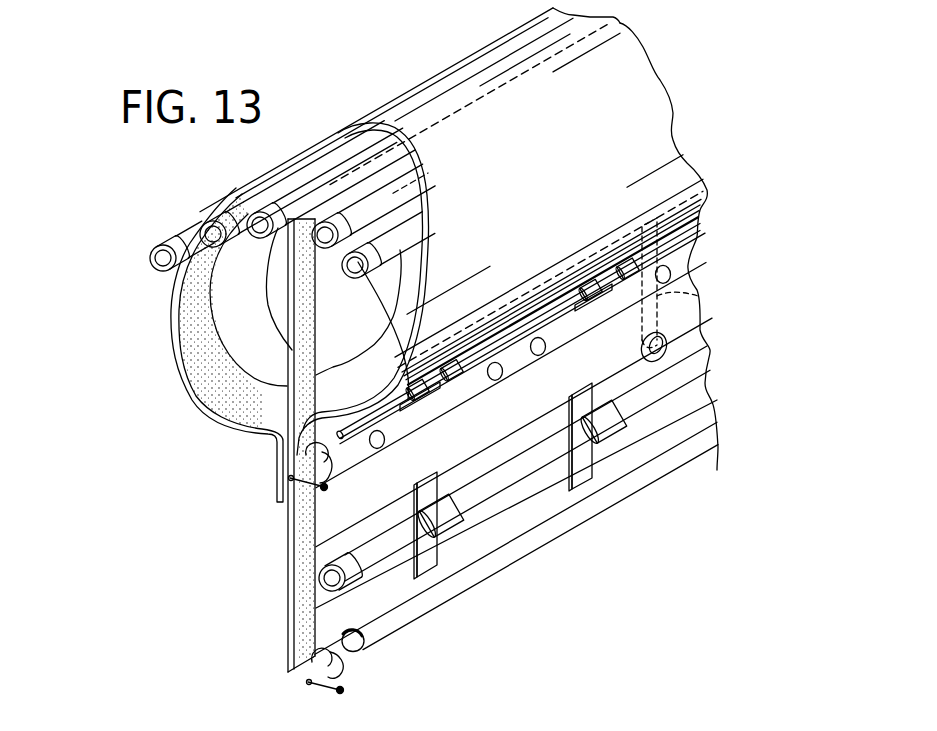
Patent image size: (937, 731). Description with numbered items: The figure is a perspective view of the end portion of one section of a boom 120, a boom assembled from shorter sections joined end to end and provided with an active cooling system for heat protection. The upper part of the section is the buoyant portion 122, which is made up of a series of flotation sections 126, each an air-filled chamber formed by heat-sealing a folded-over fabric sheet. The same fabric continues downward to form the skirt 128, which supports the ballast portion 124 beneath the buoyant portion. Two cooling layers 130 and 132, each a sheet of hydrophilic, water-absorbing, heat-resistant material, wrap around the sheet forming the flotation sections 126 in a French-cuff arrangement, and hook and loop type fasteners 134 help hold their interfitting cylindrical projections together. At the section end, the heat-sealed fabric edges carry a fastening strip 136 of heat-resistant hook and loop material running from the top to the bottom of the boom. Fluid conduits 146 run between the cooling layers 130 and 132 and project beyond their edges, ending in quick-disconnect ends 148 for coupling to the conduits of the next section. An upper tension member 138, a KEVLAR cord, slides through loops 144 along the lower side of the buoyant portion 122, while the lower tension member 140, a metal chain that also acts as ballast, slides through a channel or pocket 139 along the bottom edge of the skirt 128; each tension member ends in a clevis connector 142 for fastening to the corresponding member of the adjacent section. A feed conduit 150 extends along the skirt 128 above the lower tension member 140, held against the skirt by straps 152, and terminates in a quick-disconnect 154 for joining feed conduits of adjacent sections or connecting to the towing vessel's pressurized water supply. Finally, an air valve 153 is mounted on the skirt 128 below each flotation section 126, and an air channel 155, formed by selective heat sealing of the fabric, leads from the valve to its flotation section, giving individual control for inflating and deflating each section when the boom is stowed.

The boom 120 is at (152, 177).
The buoyant portion 122 is at (688, 58).
The ballast portion 124 is at (746, 426).
The flotation section 126 is at (268, 286).
The skirt 128 is at (705, 386).
The cooling layer 130 is at (398, 119).
The cooling layer 132 is at (400, 263).
The hook and loop type fasteners 134 is at (220, 385).
The fastening strip 136 is at (302, 531).
The upper tension member 138 is at (689, 237).
The channel or pocket 139 is at (668, 465).
The lower tension member 140 is at (366, 647).
The clevis connector 142 is at (302, 468).
The loops 144 is at (437, 376).
The fluid conduits 146 is at (480, 197).
The quick-disconnect ends 148 is at (168, 253).
The feed conduit 150 is at (703, 363).
The straps 152 is at (430, 557).
The air valve 153 is at (673, 343).
The quick-disconnect 154 is at (327, 580).
The air channel 155 is at (698, 296).